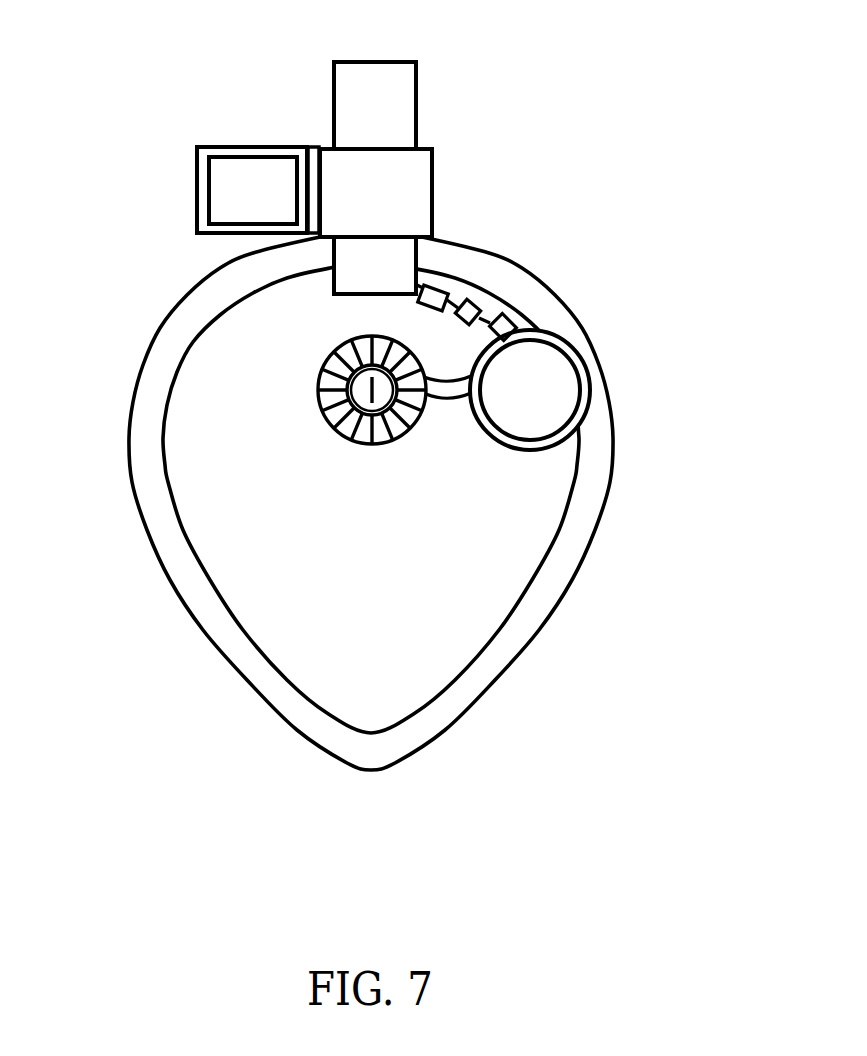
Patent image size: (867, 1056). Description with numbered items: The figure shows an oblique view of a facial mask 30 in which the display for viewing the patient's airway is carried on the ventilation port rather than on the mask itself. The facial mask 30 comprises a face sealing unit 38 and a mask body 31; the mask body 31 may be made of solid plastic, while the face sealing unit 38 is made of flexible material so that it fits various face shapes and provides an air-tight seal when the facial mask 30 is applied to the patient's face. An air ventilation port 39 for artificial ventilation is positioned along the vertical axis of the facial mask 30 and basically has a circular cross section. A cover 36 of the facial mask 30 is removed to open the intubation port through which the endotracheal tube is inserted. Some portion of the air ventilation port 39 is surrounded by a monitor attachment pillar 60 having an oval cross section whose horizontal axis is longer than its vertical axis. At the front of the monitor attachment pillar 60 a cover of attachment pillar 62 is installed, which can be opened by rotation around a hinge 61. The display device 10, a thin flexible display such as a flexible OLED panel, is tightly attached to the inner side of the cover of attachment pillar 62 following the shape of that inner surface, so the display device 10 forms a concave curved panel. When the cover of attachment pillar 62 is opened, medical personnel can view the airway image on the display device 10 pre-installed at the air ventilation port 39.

The display device 10 is at (252, 190).
The facial mask 30 is at (492, 750).
The mask body 31 is at (368, 642).
The cover 36 is at (530, 388).
The face sealing unit 38 is at (592, 430).
The air ventilation port 39 is at (417, 88).
The monitor attachment pillar 60 is at (433, 193).
The hinge 61 is at (313, 190).
The cover of attachment pillar 62 is at (197, 163).